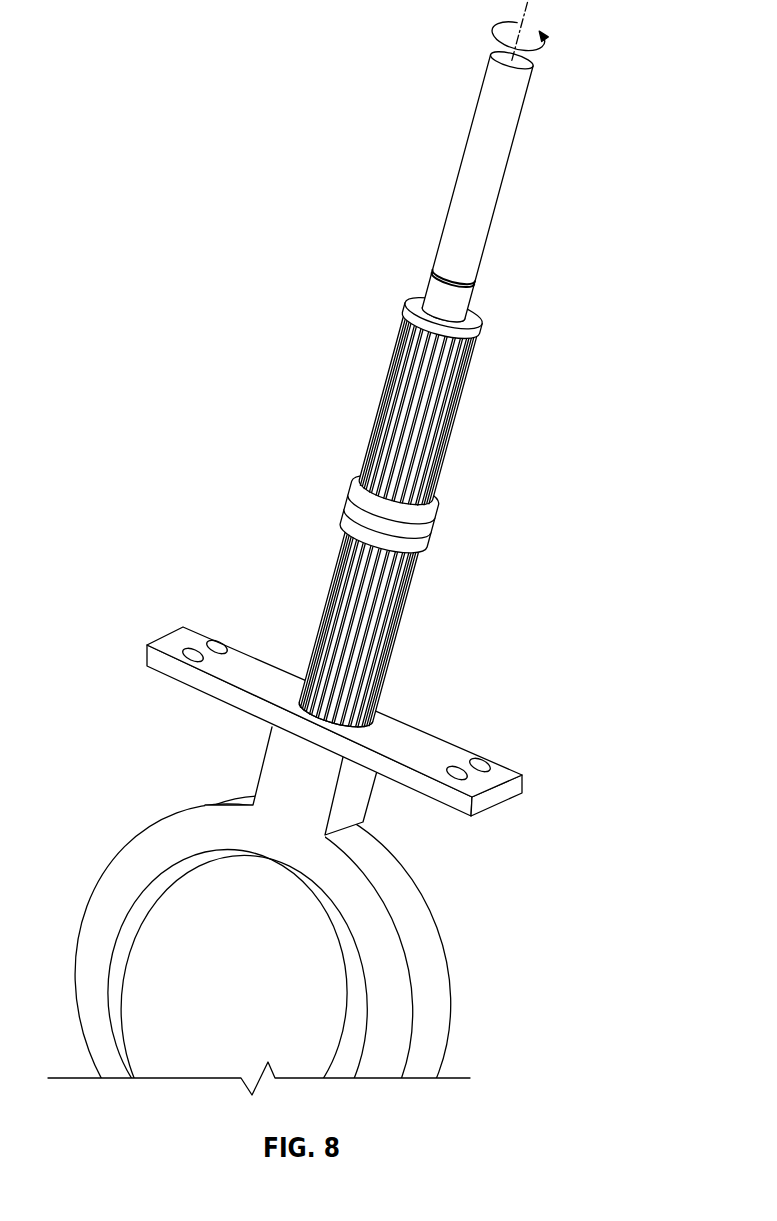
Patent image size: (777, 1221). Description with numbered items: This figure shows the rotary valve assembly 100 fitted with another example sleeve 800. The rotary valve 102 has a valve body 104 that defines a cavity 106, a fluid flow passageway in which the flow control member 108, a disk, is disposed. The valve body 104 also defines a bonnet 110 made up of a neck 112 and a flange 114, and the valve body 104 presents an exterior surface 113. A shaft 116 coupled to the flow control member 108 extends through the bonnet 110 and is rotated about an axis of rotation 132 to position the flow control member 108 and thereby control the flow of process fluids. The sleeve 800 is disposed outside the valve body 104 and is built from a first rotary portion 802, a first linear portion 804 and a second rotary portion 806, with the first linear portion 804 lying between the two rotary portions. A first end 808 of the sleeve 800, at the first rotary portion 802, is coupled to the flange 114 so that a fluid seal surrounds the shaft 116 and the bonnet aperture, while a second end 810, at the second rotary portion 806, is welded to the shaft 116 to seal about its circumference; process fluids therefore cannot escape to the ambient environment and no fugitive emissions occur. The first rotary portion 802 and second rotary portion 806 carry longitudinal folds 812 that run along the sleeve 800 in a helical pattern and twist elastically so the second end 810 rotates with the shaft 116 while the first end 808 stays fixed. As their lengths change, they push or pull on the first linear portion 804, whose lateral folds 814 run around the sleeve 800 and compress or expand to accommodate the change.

The rotary valve assembly 100 is at (326, 610).
The rotary valve 102 is at (300, 924).
The valve body 104 is at (163, 835).
The cavity 106 is at (348, 1046).
The flow control member 108 is at (306, 962).
The bonnet 110 is at (293, 785).
The neck 112 is at (354, 788).
The exterior surface 113 is at (433, 748).
The flange 114 is at (498, 788).
The shaft 116 is at (478, 186).
The axis of rotation 132 is at (530, 50).
The sleeve 800 is at (418, 377).
The first rotary portion 802 is at (334, 623).
The first linear portion 804 is at (369, 508).
The second rotary portion 806 is at (394, 402).
The first end 808 is at (334, 717).
The second end 810 is at (442, 318).
The longitudinal folds 812 is at (387, 523).
The lateral folds 814 is at (389, 514).